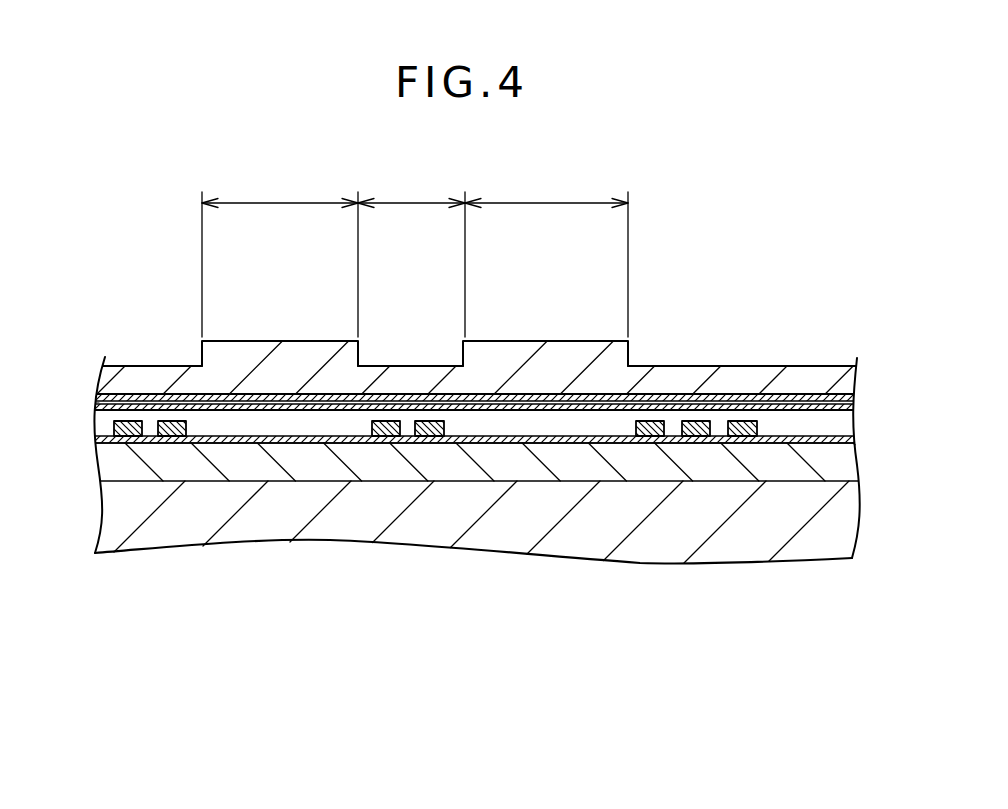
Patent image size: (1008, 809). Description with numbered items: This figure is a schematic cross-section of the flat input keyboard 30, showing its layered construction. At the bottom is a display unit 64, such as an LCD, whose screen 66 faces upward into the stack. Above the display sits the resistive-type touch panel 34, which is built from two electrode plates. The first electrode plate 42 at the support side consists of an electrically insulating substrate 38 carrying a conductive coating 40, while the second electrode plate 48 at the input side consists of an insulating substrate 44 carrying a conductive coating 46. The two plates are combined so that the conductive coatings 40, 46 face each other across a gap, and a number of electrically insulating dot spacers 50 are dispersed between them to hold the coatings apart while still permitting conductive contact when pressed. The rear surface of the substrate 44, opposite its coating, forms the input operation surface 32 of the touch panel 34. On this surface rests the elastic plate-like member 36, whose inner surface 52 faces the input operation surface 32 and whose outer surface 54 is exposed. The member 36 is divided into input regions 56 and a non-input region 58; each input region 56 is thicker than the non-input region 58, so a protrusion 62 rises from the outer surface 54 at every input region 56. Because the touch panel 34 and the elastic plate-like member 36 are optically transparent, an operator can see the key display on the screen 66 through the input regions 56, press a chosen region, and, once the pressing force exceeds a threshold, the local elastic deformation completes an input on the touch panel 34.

The flat input keyboard 30 is at (765, 247).
The input operation surface 32 is at (806, 392).
The resistive-type touch panel 34 is at (708, 484).
The elastic plate-like member 36 is at (752, 363).
The substrate 38 is at (253, 467).
The conductive coating 40 is at (317, 443).
The first electrode plate 42 is at (477, 547).
The substrate 44 is at (702, 397).
The conductive coating 46 is at (653, 406).
The second electrode plate 48 is at (477, 329).
The dot spacers 50 is at (425, 438).
The inner surface 52 is at (113, 405).
The outer surface 54 is at (175, 366).
The input regions 56 is at (415, 255).
The non-input region 58 is at (411, 190).
The protrusion 62 is at (241, 341).
The display unit 64 is at (182, 522).
The screen 66 is at (115, 470).